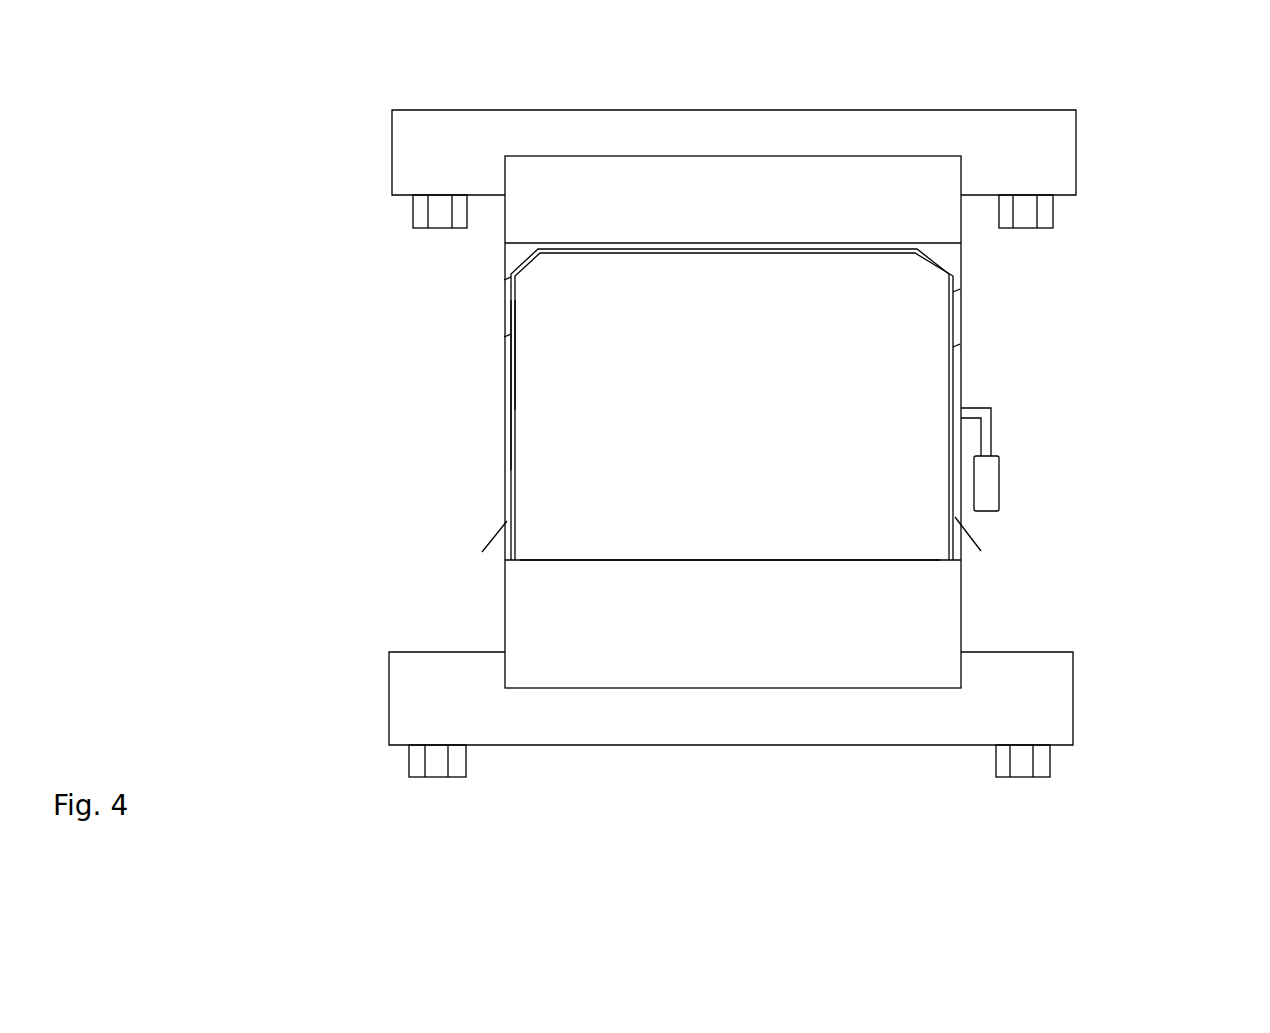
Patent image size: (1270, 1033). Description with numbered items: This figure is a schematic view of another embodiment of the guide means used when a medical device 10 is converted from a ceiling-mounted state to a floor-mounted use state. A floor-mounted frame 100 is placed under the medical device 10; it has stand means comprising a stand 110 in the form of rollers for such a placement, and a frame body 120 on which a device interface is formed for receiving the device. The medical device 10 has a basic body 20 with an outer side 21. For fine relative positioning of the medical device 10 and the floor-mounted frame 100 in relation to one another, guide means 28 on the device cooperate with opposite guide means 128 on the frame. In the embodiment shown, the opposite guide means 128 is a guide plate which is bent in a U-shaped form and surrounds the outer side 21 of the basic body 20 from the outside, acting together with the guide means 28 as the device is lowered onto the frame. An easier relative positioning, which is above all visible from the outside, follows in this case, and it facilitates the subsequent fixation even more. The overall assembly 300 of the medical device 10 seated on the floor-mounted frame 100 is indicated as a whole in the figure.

The floor-mounted frame 100 is at (338, 168).
The stand 110 is at (413, 219).
The frame body 120 is at (622, 178).
The medical device 10 is at (926, 546).
The basic body 20 is at (562, 541).
The outer side 21 is at (512, 468).
The guide means 28 is at (512, 408).
The opposite guide means 128 is at (958, 321).
The molding system 300 is at (1145, 312).